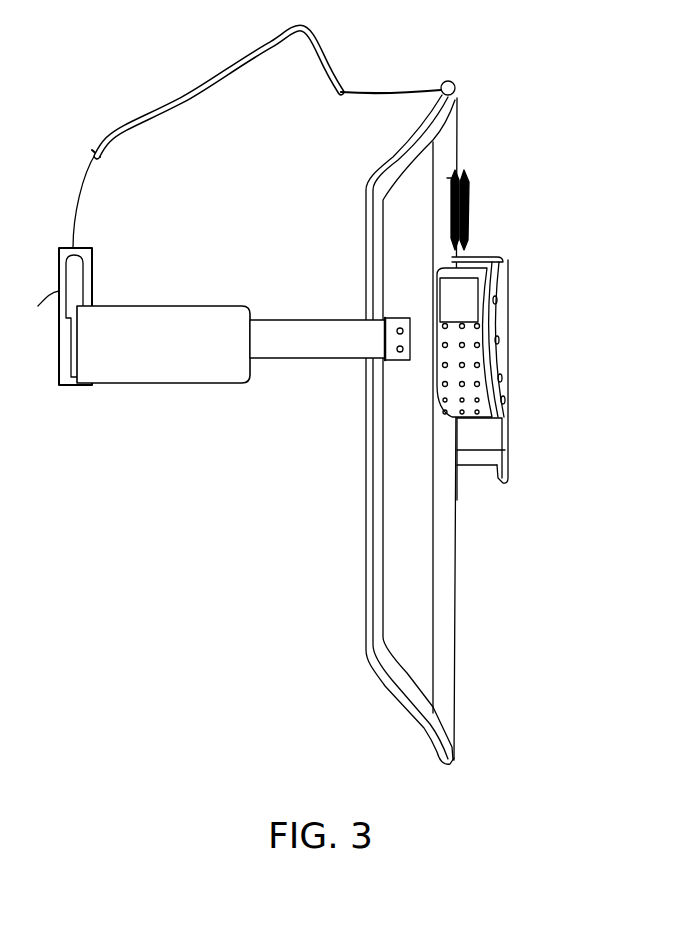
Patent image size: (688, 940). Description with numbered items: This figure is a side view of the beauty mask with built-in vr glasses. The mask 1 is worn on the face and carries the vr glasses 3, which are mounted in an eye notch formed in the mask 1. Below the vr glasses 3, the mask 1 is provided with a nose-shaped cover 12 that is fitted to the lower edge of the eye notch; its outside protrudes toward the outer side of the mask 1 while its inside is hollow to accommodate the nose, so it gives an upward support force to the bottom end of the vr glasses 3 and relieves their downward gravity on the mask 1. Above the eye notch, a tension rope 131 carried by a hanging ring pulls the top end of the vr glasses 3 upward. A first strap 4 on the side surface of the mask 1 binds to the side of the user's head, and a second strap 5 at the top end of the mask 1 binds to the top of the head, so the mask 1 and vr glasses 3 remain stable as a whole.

The mask 1 is at (393, 488).
The vr glasses 3 is at (503, 318).
The first strap 4 is at (197, 363).
The second strap 5 is at (176, 102).
The nose-shaped cover 12 is at (485, 440).
The tension rope 131 is at (470, 210).